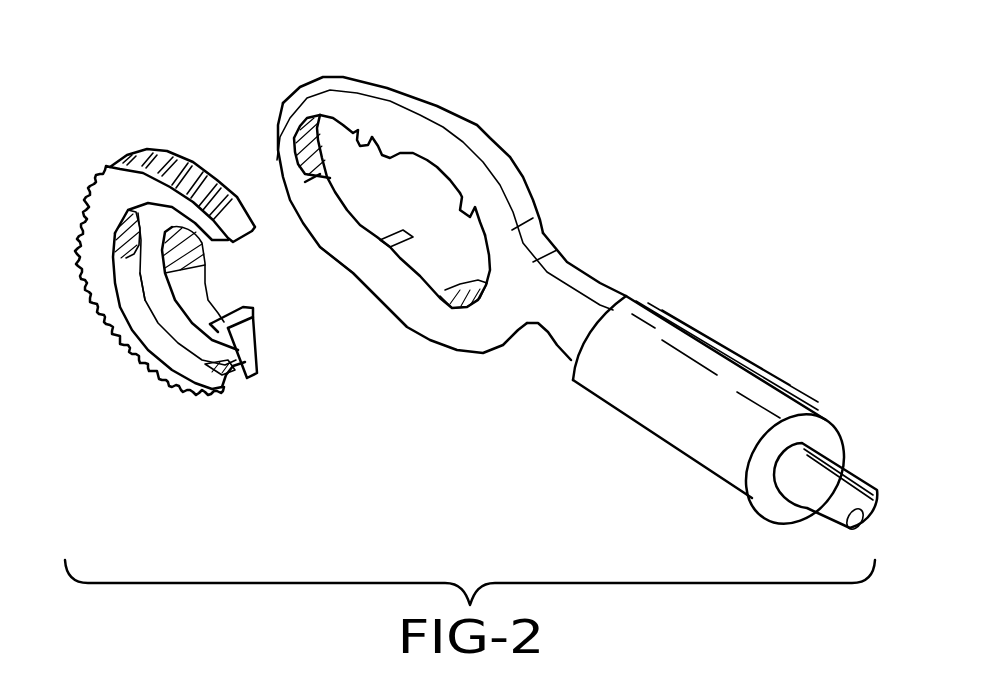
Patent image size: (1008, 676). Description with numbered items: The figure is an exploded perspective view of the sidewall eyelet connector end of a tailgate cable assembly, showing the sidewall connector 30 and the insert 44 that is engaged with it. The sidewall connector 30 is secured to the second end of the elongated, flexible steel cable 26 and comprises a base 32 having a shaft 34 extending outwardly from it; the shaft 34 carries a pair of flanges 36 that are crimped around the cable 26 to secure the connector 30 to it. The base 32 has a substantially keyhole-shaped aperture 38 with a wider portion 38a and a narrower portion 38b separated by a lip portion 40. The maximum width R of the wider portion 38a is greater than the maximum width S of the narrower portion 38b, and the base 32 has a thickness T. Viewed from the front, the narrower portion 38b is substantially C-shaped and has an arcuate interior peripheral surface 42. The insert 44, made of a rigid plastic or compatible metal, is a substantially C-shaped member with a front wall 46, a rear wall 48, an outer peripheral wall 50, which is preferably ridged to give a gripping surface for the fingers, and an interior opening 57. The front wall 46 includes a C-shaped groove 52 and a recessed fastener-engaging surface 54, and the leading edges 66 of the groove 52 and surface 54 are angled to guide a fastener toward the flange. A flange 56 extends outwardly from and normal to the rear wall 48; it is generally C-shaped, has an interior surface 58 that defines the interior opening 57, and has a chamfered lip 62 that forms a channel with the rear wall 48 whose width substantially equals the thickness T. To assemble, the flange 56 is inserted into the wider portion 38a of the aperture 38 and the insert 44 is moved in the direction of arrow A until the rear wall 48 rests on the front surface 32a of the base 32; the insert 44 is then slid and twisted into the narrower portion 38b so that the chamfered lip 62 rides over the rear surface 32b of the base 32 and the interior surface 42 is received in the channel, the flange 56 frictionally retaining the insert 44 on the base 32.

The cable 26 is at (827, 502).
The sidewall connector 30 is at (584, 266).
The base 32 is at (420, 327).
The front surface 32a is at (382, 277).
The rear surface 32b is at (515, 166).
The shaft 34 is at (557, 325).
The flanges 36 is at (633, 395).
The keyhole-shaped aperture 38 is at (413, 153).
The wider portion 38a is at (465, 190).
The narrower portion 38b is at (358, 133).
The lip portion 40 is at (393, 237).
The arcuate interior peripheral surface 42 is at (304, 156).
The insert 44 is at (150, 365).
The front wall 46 is at (90, 212).
The rear wall 48 is at (255, 366).
The outer peripheral wall 50 is at (163, 152).
The C-shaped groove 52 is at (127, 258).
The recessed fastener-engaging surface 54 is at (168, 308).
The flange 56 is at (232, 296).
The interior opening 57 is at (178, 289).
The interior surface 58 is at (205, 282).
The chamfered lip 62 is at (250, 322).
The leading edges 66 is at (225, 362).
The maximum width of narrower portion S is at (345, 118).
The maximum width of wider portion R is at (436, 165).
The thickness of base T is at (306, 178).
The direction arrow A is at (350, 400).